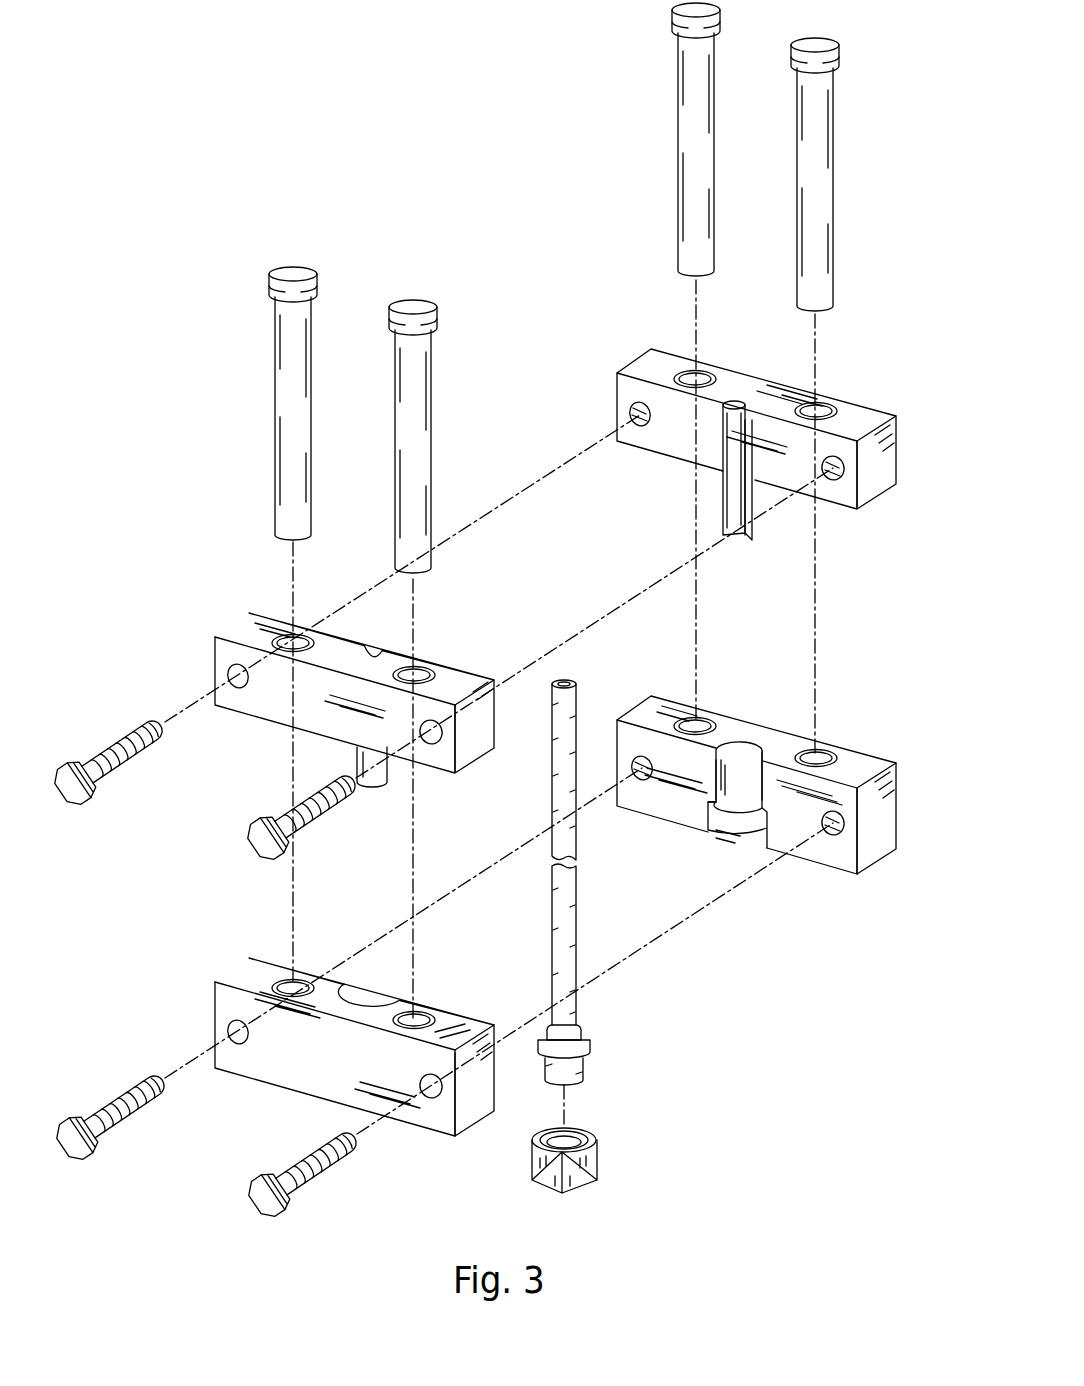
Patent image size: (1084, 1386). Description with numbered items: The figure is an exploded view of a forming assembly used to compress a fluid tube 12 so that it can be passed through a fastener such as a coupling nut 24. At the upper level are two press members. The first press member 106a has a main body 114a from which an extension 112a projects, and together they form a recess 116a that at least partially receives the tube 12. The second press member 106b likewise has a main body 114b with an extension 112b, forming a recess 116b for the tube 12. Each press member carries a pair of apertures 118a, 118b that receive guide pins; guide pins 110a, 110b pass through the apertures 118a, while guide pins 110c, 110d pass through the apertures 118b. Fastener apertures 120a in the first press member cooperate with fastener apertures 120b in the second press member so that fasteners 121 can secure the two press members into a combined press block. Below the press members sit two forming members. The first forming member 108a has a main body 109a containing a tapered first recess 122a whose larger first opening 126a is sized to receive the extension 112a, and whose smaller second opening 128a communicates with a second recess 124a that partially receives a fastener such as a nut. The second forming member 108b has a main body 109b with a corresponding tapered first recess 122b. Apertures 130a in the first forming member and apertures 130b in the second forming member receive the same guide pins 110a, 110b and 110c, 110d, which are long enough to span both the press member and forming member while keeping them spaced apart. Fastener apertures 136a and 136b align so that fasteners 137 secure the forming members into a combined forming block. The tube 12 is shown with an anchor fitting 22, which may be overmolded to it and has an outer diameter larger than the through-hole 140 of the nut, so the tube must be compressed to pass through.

The fluid tube 12 is at (538, 706).
The anchor fitting 22 is at (590, 1046).
The coupling nut 24 is at (598, 1160).
The through-hole 140 is at (582, 1128).
The first press member 106a is at (880, 455).
The second press member 106b is at (470, 740).
The first forming member 108a is at (875, 837).
The second forming member 108b is at (330, 1070).
The main body 109a is at (873, 765).
The main body 109b is at (240, 985).
The guide pin 110a is at (688, 133).
The guide pin 110b is at (822, 210).
The guide pin 110c is at (296, 267).
The guide pin 110d is at (417, 302).
The extension 112a is at (728, 511).
The extension 112b is at (358, 761).
The main body 114a is at (870, 420).
The main body 114b is at (240, 637).
The recess 116a is at (739, 548).
The recess 116b is at (373, 630).
The apertures 118a is at (692, 380).
The apertures 118b is at (290, 642).
The fastener apertures 120a is at (633, 412).
The fastener apertures 120b is at (231, 675).
The fastener 121 is at (256, 836).
The first recess 122a is at (742, 742).
The first recess 122b is at (370, 982).
The second recess 124a is at (746, 856).
The first opening 126a is at (702, 804).
The second opening 128a is at (722, 838).
The apertures 130a is at (692, 720).
The apertures 130b is at (290, 985).
The fastener apertures 136a is at (640, 765).
The fastener apertures 136b is at (231, 1032).
The fastener 137 is at (257, 1192).